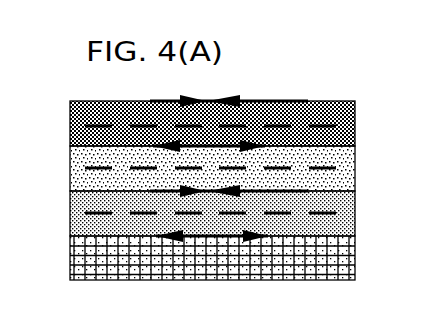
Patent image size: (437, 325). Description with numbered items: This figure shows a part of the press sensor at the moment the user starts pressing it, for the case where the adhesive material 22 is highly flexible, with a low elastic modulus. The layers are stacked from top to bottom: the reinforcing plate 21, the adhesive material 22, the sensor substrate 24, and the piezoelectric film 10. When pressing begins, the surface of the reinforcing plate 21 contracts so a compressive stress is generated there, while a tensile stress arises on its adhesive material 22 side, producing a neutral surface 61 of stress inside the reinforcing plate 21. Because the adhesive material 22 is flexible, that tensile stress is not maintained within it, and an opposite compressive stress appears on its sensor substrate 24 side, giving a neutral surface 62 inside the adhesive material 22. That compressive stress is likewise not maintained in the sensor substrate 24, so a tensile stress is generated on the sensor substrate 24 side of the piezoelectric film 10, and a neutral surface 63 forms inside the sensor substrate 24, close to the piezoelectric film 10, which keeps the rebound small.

The reinforcing plate 21 is at (348, 119).
The adhesive material 22 is at (348, 161).
The sensor substrate 24 is at (348, 211).
The piezoelectric film 10 is at (348, 249).
The neutral surface 61 is at (310, 115).
The neutral surface 62 is at (272, 157).
The neutral surface 63 is at (92, 208).